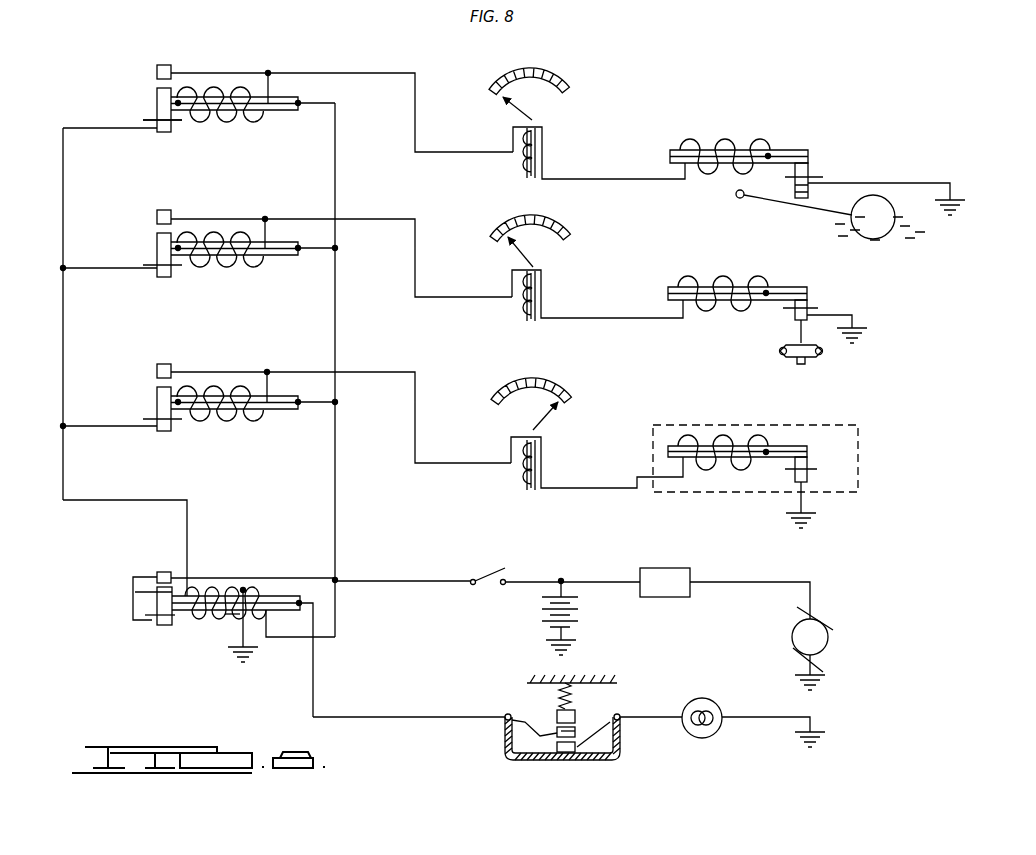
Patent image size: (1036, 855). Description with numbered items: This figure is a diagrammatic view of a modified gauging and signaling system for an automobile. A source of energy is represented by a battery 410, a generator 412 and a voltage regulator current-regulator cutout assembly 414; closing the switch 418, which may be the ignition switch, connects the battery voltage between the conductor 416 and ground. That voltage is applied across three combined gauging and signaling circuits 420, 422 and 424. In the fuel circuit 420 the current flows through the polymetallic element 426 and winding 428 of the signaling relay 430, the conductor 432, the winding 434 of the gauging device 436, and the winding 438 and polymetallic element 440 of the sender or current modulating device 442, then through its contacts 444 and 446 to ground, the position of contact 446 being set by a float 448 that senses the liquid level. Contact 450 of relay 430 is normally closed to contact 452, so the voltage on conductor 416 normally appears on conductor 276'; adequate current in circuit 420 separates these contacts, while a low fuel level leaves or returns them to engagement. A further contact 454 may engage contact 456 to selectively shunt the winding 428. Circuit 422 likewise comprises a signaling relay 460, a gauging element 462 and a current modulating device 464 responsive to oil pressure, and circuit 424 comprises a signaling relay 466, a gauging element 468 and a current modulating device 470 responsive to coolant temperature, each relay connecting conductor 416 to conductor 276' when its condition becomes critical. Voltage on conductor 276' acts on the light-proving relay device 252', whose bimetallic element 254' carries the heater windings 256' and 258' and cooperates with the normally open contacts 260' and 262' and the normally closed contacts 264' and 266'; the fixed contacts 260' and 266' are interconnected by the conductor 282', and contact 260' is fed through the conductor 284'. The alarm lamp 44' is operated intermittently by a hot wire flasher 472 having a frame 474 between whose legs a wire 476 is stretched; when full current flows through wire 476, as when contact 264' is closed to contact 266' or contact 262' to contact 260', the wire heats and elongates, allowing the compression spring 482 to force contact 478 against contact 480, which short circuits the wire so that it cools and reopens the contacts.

The contact 454 is at (157, 72).
The signaling relay 430 is at (157, 93).
The contact 450 is at (157, 117).
The contact 452 is at (170, 128).
The contact 456 is at (173, 90).
The winding 428 is at (223, 90).
The polymetallic element 426 is at (296, 100).
The conductor 432 is at (378, 73).
The signaling relay 460 is at (157, 247).
The signaling relay 466 is at (157, 402).
The conductor 416 is at (345, 503).
The conductor 276' is at (125, 526).
The gauging device 436 is at (545, 110).
The winding 434 is at (545, 148).
The gauging element 462 is at (548, 263).
The gauging element 468 is at (548, 427).
The gauging and signaling circuit 420 is at (818, 172).
The winding 438 is at (735, 147).
The polymetallic element 440 is at (778, 148).
The sender or current modulating device 442 is at (808, 145).
The contact 444 is at (808, 165).
The contact 446 is at (782, 183).
The float 448 is at (853, 217).
The gauging and signaling circuit 422 is at (817, 310).
The current modulating device 464 is at (790, 288).
The gauging and signaling circuit 424 is at (810, 462).
The current modulating device 470 is at (785, 446).
The contact 260' is at (141, 561).
The conductor 284' is at (254, 559).
The contact 262' is at (119, 602).
The conductor 282' is at (110, 602).
The contact 264' is at (122, 634).
The contact 266' is at (211, 656).
The heater winding 256' is at (244, 588).
The heater winding 258' is at (237, 609).
The light-proving relay device 252' is at (203, 641).
The bimetallic element 254' is at (291, 651).
The switch 418 is at (490, 578).
The battery 410 is at (540, 614).
The voltage regulator current-regulator cutout assembly 414 is at (682, 590).
The generator 412 is at (825, 640).
The flasher 472 is at (605, 763).
The frame 474 is at (525, 756).
The compression spring 482 is at (558, 690).
The contact 478 is at (577, 700).
The wire 476 is at (580, 715).
The contact 480 is at (565, 752).
The alarm lamp 44' is at (722, 701).